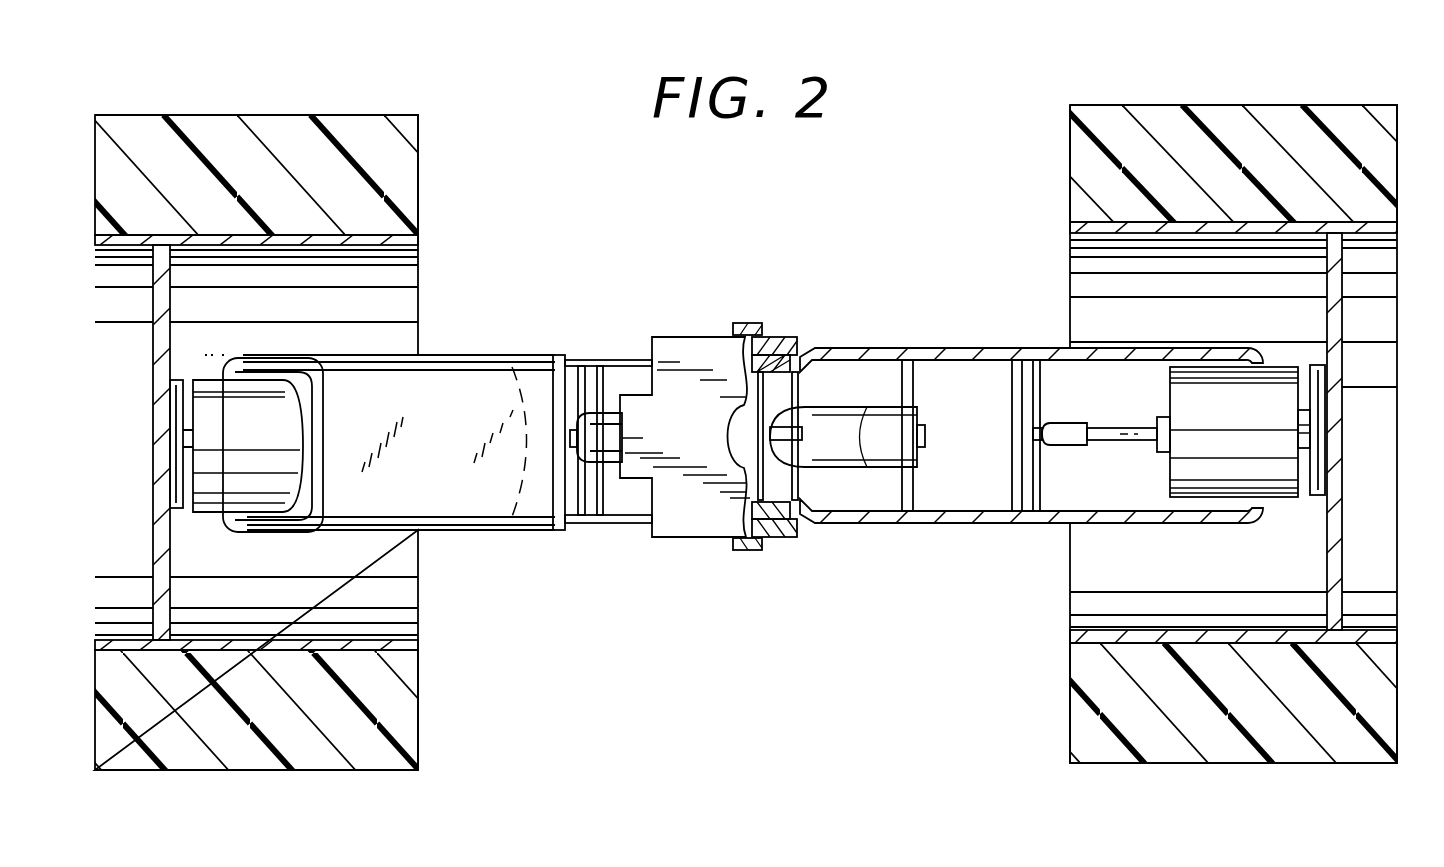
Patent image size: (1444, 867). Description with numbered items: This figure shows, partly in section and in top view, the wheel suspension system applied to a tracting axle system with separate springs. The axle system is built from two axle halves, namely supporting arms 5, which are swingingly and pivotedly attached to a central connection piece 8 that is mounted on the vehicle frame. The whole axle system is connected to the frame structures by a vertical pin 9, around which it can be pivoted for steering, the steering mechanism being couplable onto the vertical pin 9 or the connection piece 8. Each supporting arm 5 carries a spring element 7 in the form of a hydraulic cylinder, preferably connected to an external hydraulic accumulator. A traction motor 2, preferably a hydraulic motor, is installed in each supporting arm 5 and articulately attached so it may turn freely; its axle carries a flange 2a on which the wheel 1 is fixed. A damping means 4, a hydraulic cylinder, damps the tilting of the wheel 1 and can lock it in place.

The wheel 1 is at (360, 135).
The traction motor 2 is at (287, 413).
The flange 2a is at (178, 372).
The damping means 4 is at (1058, 425).
The supporting arm 5 is at (482, 380).
The spring element 7 is at (603, 362).
The connection piece 8 is at (695, 348).
The vertical pin 9 is at (742, 418).